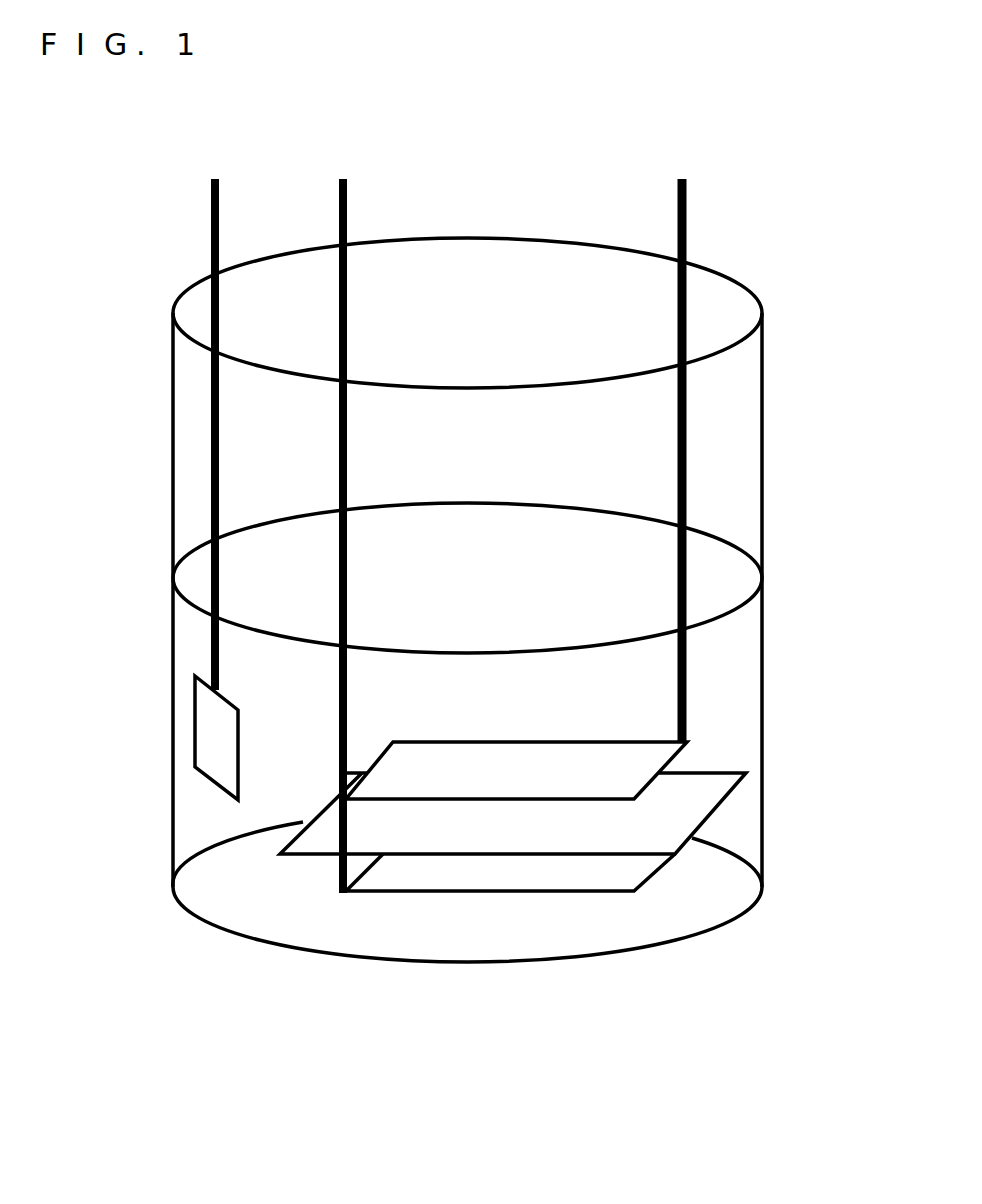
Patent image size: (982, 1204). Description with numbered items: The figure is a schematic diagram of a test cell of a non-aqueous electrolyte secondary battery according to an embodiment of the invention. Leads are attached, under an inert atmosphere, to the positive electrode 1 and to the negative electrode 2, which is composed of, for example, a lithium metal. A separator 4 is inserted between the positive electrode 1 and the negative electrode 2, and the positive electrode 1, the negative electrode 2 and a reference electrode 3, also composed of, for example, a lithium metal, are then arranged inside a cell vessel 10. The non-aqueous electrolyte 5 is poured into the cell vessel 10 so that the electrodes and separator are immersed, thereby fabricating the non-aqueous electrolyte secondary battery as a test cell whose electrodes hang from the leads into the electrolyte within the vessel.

The positive electrode 1 is at (522, 873).
The negative electrode 2 is at (493, 755).
The reference electrode 3 is at (218, 727).
The separator 4 is at (697, 804).
The non-aqueous electrolyte 5 is at (740, 685).
The cell vessel 10 is at (763, 510).